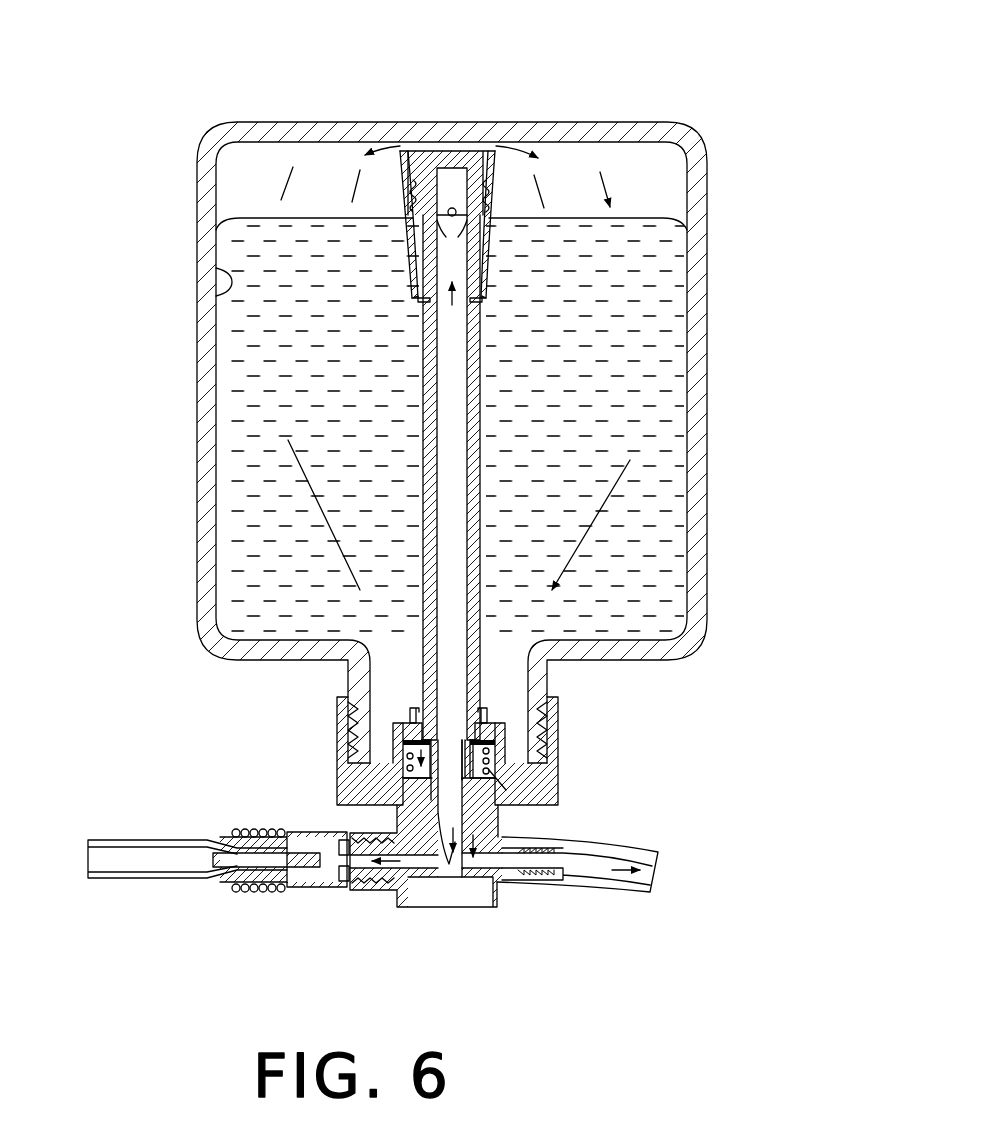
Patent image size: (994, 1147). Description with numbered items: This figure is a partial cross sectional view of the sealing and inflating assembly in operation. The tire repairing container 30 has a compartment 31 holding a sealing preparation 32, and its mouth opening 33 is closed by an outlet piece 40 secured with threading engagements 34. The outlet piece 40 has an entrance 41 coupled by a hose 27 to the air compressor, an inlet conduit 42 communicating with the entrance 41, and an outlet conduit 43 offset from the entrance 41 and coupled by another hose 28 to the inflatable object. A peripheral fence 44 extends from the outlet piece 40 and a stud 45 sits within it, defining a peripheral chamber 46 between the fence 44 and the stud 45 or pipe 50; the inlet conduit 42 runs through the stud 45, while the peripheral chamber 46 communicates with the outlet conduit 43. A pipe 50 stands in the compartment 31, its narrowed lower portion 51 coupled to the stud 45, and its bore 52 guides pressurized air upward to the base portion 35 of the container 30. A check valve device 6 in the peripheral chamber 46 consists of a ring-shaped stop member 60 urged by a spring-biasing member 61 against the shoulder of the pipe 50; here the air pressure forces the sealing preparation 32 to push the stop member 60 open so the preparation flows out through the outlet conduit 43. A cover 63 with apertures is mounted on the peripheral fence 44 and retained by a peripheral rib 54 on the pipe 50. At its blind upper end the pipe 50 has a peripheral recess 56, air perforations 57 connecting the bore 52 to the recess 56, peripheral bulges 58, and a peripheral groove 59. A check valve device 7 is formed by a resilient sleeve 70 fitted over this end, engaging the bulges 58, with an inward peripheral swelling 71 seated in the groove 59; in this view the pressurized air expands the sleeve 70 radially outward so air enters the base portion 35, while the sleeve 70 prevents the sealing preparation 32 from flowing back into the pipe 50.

The check valve device 6 is at (492, 770).
The check valve device 7 is at (506, 145).
The hose 27 is at (162, 878).
The hose 28 is at (647, 893).
The tire repairing container 30 is at (207, 176).
The compartment 31 is at (216, 296).
The sealing preparation 32 is at (660, 386).
The mouth opening 33 is at (540, 700).
The threading engagements 34 is at (552, 735).
The base portion 35 is at (700, 145).
The outlet piece 40 is at (340, 702).
The entrance 41 is at (418, 782).
The inlet conduit 42 is at (450, 866).
The outlet conduit 43 is at (497, 858).
The peripheral fence 44 is at (396, 736).
The stud 45 is at (430, 778).
The peripheral chamber 46 is at (380, 812).
The pipe 50 is at (428, 422).
The lower portion 51 is at (463, 788).
The bore 52 is at (460, 482).
The peripheral rib 54 is at (486, 712).
The peripheral recess 56 is at (416, 160).
The air perforations 57 is at (453, 208).
The peripheral bulges 58 is at (492, 158).
The peripheral groove 59 is at (418, 300).
The stop member 60 is at (488, 750).
The spring-biasing member 61 is at (407, 768).
The cover 63 is at (412, 710).
The sleeve 70 is at (500, 178).
The peripheral swelling 71 is at (482, 300).